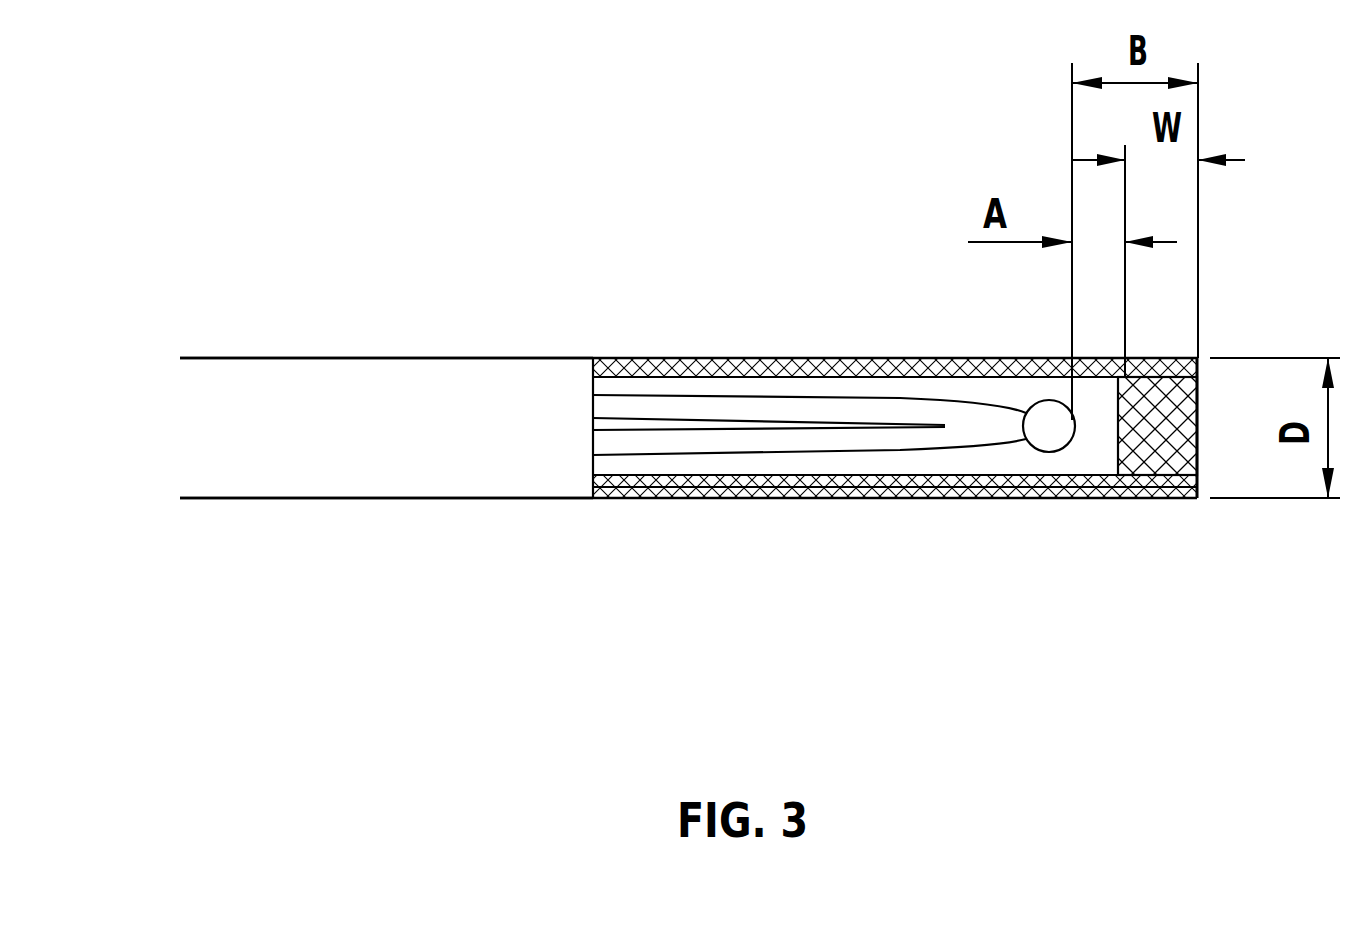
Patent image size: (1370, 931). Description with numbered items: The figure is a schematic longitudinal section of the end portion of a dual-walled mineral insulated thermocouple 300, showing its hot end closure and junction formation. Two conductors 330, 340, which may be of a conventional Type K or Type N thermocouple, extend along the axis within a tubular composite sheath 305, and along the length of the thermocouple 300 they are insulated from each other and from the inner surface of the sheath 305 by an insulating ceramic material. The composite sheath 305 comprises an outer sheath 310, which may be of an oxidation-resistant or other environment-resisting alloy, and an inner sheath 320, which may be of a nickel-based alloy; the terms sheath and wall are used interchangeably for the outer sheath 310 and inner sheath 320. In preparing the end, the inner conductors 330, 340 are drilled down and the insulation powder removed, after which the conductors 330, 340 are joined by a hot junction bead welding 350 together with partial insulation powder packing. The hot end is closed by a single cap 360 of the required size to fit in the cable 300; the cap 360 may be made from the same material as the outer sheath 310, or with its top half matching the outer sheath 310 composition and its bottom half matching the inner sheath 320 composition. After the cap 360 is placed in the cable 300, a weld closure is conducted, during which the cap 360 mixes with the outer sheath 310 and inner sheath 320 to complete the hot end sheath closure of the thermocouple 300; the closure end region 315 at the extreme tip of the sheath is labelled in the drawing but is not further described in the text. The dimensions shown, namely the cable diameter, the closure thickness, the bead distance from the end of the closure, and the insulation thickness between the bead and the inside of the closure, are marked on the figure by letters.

The thermocouple 300 is at (472, 260).
The composite sheath 305 is at (353, 453).
The outer sheath 310 is at (712, 497).
The end cap 315 is at (1170, 487).
The inner sheath 320 is at (810, 480).
The conductor 330 is at (791, 411).
The conductor 340 is at (685, 447).
The hot junction bead welding 350 is at (1050, 424).
The single cap 360 is at (1138, 435).